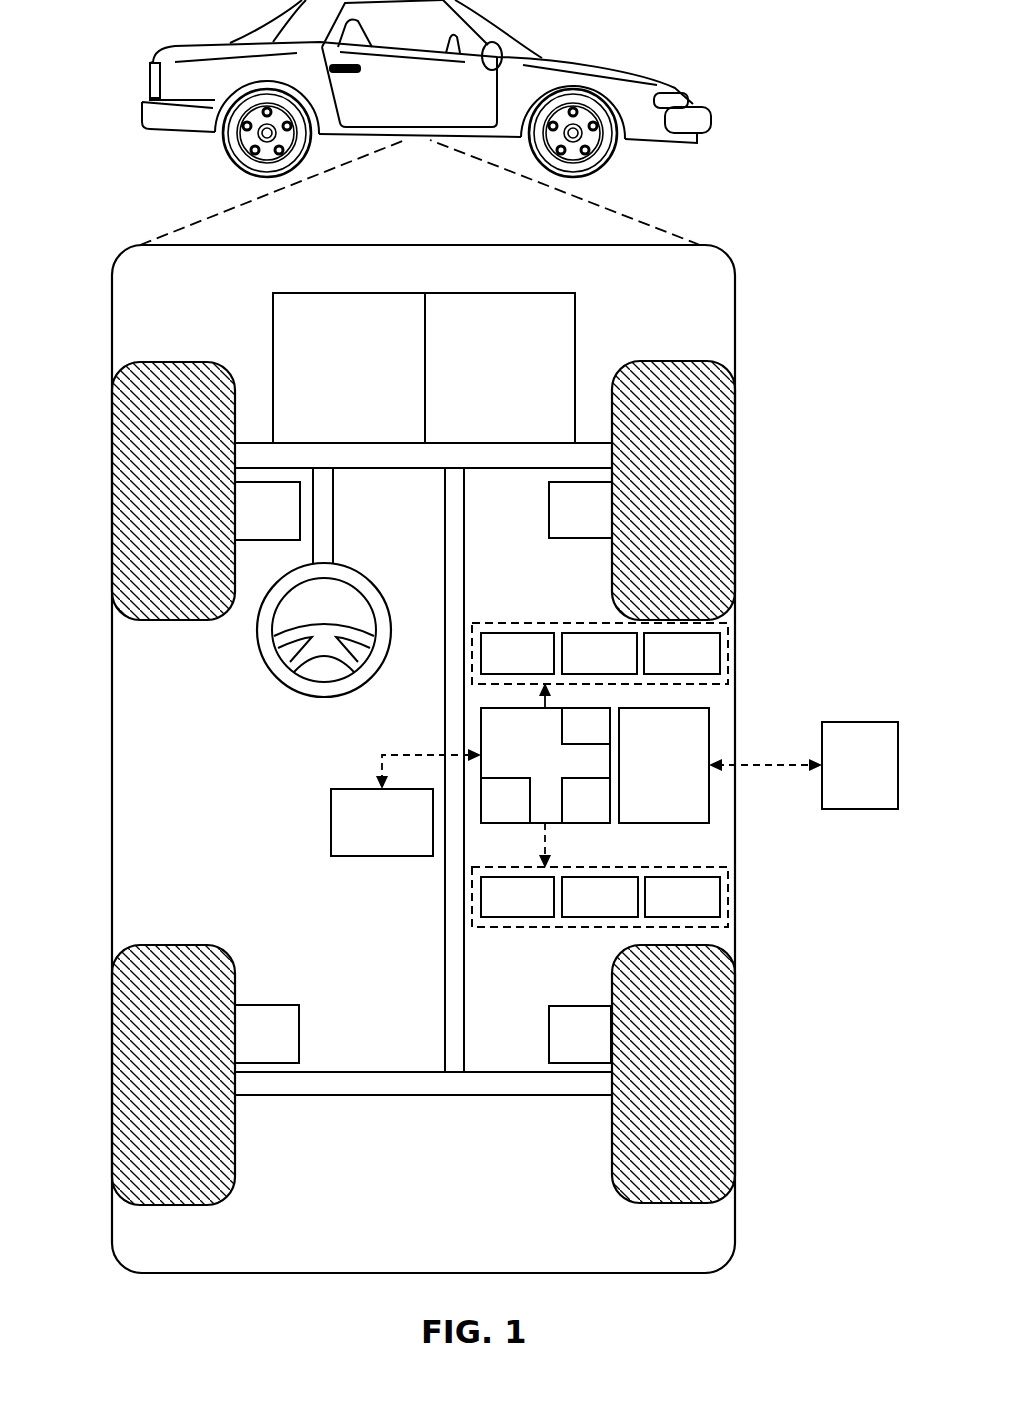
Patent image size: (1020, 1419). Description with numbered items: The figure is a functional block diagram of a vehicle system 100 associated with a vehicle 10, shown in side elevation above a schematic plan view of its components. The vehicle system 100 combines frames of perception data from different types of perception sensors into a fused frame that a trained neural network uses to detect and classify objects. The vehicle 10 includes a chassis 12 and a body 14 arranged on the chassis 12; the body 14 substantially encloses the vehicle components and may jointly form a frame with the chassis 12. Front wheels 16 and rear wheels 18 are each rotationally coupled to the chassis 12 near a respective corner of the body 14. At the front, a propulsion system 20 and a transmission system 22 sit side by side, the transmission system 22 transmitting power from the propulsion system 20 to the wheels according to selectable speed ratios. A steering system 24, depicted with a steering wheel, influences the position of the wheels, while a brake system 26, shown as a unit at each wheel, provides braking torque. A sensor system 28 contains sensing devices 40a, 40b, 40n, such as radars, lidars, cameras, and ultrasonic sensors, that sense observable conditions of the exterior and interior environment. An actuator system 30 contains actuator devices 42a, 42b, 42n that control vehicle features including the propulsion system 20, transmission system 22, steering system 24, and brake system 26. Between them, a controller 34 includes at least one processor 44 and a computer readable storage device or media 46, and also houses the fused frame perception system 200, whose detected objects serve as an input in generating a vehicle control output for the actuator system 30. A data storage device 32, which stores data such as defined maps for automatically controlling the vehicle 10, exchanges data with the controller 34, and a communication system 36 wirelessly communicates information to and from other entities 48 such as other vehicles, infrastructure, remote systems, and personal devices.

The vehicle 10 is at (148, 72).
The vehicle system 100 is at (727, 208).
The chassis 12 is at (445, 930).
The body 14 is at (112, 755).
The front wheels 16 is at (172, 361).
The rear wheels 18 is at (172, 1205).
The propulsion system 20 is at (365, 382).
The transmission system 22 is at (516, 382).
The steering system 24 is at (348, 538).
The brake system 26 is at (283, 525).
The sensor system 28 is at (558, 623).
The actuator system 30 is at (565, 927).
The data storage device 32 is at (398, 837).
The controller 34 is at (561, 773).
The communication system 36 is at (680, 778).
The sensing device 40a is at (540, 667).
The sensing device 40b is at (623, 667).
The sensing device 40n is at (705, 667).
The actuator device 42a is at (540, 908).
The actuator device 42b is at (623, 908).
The actuator device 42n is at (705, 908).
The processor 44 is at (521, 815).
The computer readable storage device or media 46 is at (602, 815).
The other entities 48 is at (876, 778).
The fused frame perception system 200 is at (609, 740).